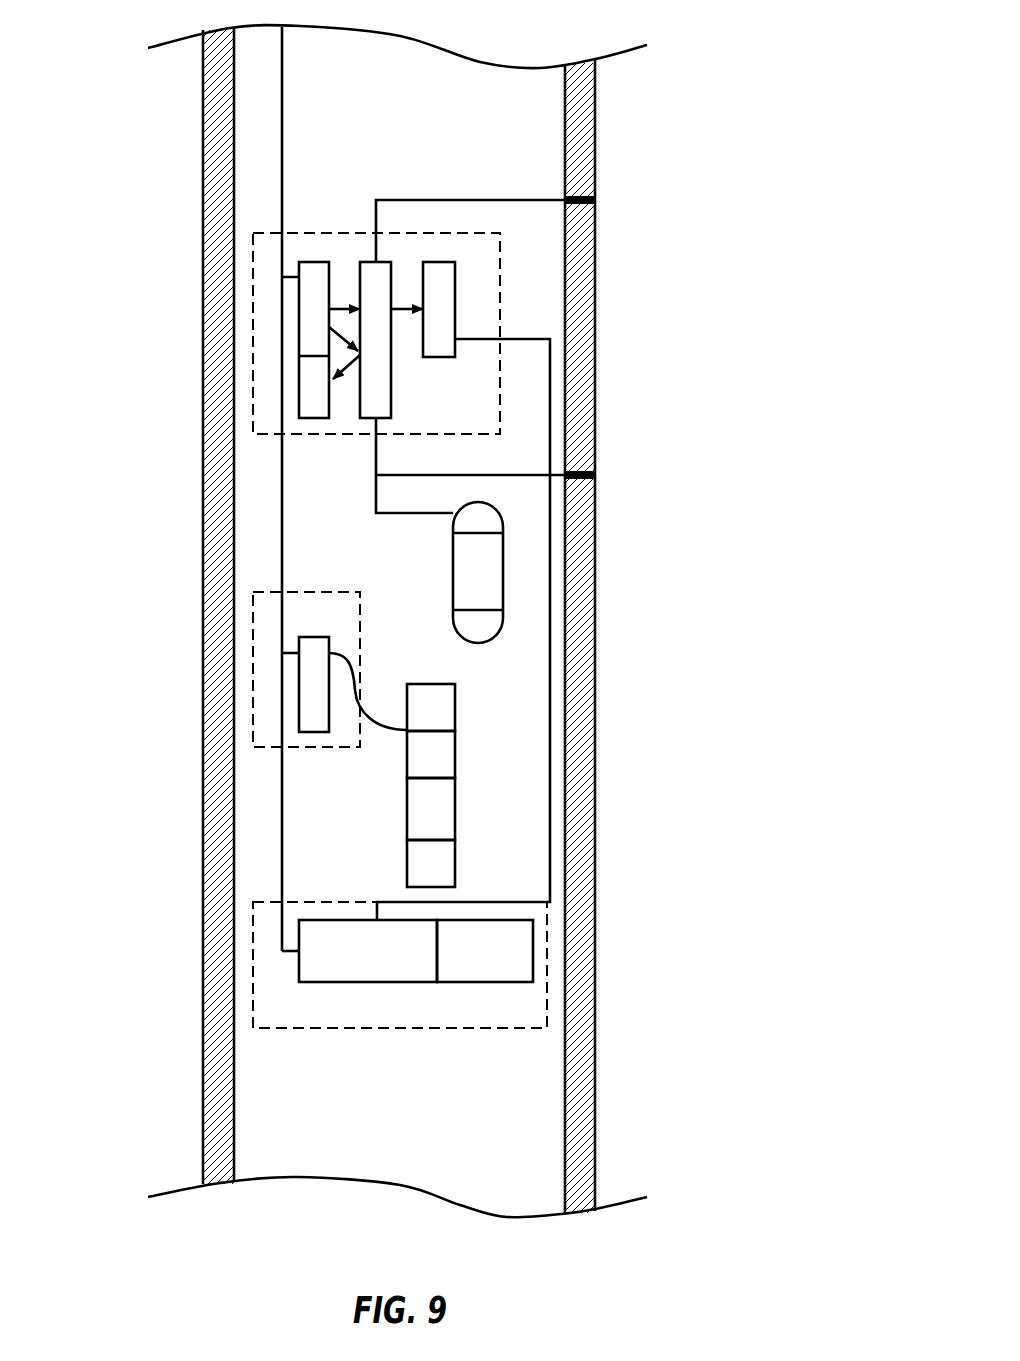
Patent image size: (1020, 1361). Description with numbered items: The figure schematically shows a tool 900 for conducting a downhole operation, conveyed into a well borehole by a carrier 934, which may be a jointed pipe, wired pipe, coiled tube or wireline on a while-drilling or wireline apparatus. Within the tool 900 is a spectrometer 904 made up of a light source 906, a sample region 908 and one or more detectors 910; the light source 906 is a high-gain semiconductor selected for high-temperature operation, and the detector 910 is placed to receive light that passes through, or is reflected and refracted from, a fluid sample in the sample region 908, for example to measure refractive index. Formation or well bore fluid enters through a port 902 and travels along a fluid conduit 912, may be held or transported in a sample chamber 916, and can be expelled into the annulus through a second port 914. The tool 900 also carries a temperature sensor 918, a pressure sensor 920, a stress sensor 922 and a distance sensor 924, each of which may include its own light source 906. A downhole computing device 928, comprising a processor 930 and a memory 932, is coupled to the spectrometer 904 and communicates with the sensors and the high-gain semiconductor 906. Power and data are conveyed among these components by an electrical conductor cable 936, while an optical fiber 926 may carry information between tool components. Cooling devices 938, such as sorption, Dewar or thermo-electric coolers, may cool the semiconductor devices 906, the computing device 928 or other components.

The tool 900 is at (712, 45).
The port 902 is at (580, 196).
The spectrometer 904 is at (265, 437).
The light source 906 is at (299, 300).
The sample region 908 is at (391, 387).
The detector 910 is at (299, 387).
The fluid conduit 912 is at (428, 198).
The port 914 is at (512, 474).
The sample chamber 916 is at (503, 587).
The temperature sensor 918 is at (455, 709).
The pressure sensor 920 is at (455, 755).
The stress sensor 922 is at (455, 810).
The distance sensor 924 is at (455, 863).
The optical fiber 926 is at (392, 732).
The downhole computing device 928 is at (357, 982).
The processor 930 is at (299, 968).
The memory 932 is at (533, 951).
The carrier 934 is at (202, 1098).
The electrical conductor cable 936 is at (282, 172).
The cooling device 938 is at (253, 728).